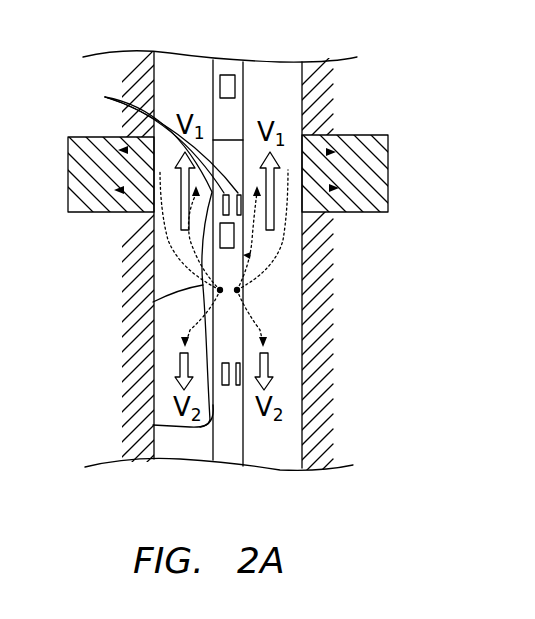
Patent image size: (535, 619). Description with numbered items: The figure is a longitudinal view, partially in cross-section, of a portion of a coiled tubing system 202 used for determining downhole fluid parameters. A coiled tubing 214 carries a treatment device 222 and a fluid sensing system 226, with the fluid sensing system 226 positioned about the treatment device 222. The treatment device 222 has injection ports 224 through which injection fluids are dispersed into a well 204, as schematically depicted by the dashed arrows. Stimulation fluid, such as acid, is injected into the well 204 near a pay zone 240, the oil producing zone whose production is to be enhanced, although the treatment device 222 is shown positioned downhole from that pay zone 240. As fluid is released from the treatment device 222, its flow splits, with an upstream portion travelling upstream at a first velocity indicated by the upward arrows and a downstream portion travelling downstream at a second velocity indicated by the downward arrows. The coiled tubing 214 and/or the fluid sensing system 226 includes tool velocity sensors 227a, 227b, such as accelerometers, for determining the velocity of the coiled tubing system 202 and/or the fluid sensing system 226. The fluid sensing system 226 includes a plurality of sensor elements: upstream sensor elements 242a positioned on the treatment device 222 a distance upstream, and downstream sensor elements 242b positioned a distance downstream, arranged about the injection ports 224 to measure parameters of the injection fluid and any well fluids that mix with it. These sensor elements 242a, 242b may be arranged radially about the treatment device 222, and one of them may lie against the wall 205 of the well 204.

The coiled tubing system 202 is at (243, 77).
The well 204 is at (297, 431).
The wall 205 is at (303, 392).
The coiled tubing 214 is at (213, 110).
The treatment device 222 is at (247, 256).
The injection ports 224 is at (241, 291).
The fluid sensing system 226 is at (153, 302).
The tool velocity sensor 227a is at (227, 75).
The tool velocity sensor 227b is at (220, 238).
The pay zone 240 is at (373, 170).
The upstream sensor elements 242a is at (141, 251).
The downstream sensor elements 242b is at (153, 425).